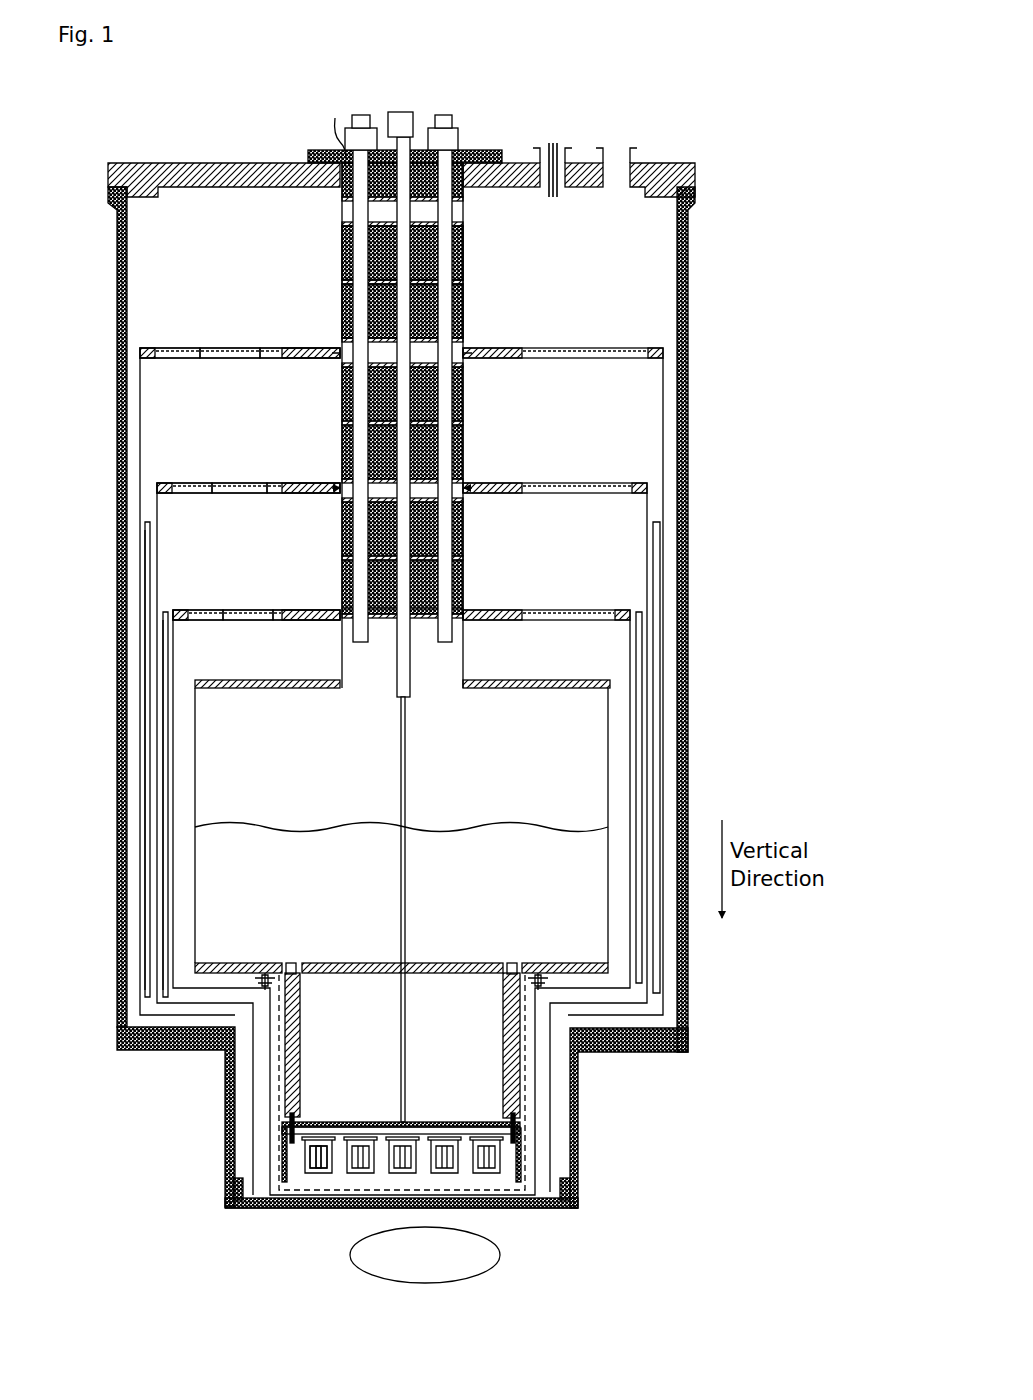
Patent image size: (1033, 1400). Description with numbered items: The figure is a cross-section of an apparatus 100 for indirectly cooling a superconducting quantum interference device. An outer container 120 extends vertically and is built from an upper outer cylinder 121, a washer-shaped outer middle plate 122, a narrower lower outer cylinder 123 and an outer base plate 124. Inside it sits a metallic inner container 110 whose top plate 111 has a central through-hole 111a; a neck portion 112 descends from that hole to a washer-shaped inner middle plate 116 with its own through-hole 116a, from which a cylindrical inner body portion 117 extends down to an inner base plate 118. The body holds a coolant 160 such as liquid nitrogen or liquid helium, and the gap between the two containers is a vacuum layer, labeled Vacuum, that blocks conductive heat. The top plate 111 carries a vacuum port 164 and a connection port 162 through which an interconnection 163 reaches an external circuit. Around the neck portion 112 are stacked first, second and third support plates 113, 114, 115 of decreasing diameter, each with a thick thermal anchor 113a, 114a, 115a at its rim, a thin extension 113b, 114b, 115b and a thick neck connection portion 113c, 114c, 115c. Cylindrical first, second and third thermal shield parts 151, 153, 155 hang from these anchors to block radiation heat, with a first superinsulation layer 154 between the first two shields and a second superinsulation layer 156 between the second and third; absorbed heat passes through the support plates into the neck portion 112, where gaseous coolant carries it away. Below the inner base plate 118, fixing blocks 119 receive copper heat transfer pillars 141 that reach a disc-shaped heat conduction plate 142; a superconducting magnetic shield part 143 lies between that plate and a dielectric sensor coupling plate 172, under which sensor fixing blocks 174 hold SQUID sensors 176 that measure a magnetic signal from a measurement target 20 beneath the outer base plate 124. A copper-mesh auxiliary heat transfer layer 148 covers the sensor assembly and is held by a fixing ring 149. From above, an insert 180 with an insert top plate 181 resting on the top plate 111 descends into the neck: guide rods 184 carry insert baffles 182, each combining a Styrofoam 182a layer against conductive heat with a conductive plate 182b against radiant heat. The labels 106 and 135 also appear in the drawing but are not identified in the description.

The apparatus for indirectly cooling a SQUID 100 is at (550, 52).
The gap 106 is at (523, 688).
The inner container 110 is at (502, 265).
The top plate 111 is at (186, 162).
The through-hole 111a is at (322, 127).
The neck portion 112 is at (341, 213).
The first support plate 113 is at (332, 296).
The first thermal anchor 113a is at (150, 348).
The first extension 113b is at (225, 348).
The first neck connection portion 113c is at (308, 348).
The second support plate 114 is at (332, 431).
The second anchor 114a is at (168, 483).
The second extension 114b is at (232, 483).
The second neck connection portion 114c is at (308, 483).
The third support plate 115 is at (332, 558).
The third anchor 115a is at (183, 610).
The third extension 115b is at (245, 610).
The third neck connection portion 115c is at (308, 610).
The inner middle plate 116 is at (258, 680).
The through-hole 116a is at (343, 688).
The inner body portion 117 is at (196, 756).
The inner base plate 118 is at (462, 963).
The fixing block 119 is at (288, 963).
The outer container 120 is at (612, 1116).
The upper outer cylinder 121 is at (688, 276).
The outer middle plate 122 is at (665, 1052).
The lower outer cylinder 123 is at (578, 1160).
The outer base plate 124 is at (530, 1208).
The rotation shaft 135 is at (406, 789).
The heat transfer pillar 141 is at (300, 1033).
The heat conduction plate 142 is at (364, 1122).
The magnetic shield part 143 is at (440, 1122).
The auxiliary heat transfer layer 148 is at (279, 1093).
The fixing ring 149 is at (262, 972).
The first thermal shield part 151 is at (128, 398).
The second thermal shield part 153 is at (150, 512).
The first superinsulation layer 154 is at (146, 552).
The third thermal shield part 155 is at (166, 643).
The second superinsulation layer 156 is at (166, 681).
The coolant 160 is at (208, 875).
The connection port 162 is at (535, 150).
The interconnection 163 is at (553, 140).
The vacuum port 164 is at (632, 150).
The sensor coupling plate 172 is at (318, 1122).
The sensor fixing block 174 is at (375, 1170).
The SQUID sensor 176 is at (355, 1173).
The insert 180 is at (386, 100).
The insert top plate 181 is at (482, 150).
The insert baffle 182 is at (560, 372).
The Styrofoam 182a is at (463, 239).
The conductive plate 182b is at (463, 292).
The guide rod 184 is at (360, 642).
The measurement target 20 is at (470, 1278).
The vacuum layer Vacuum is at (345, 992).